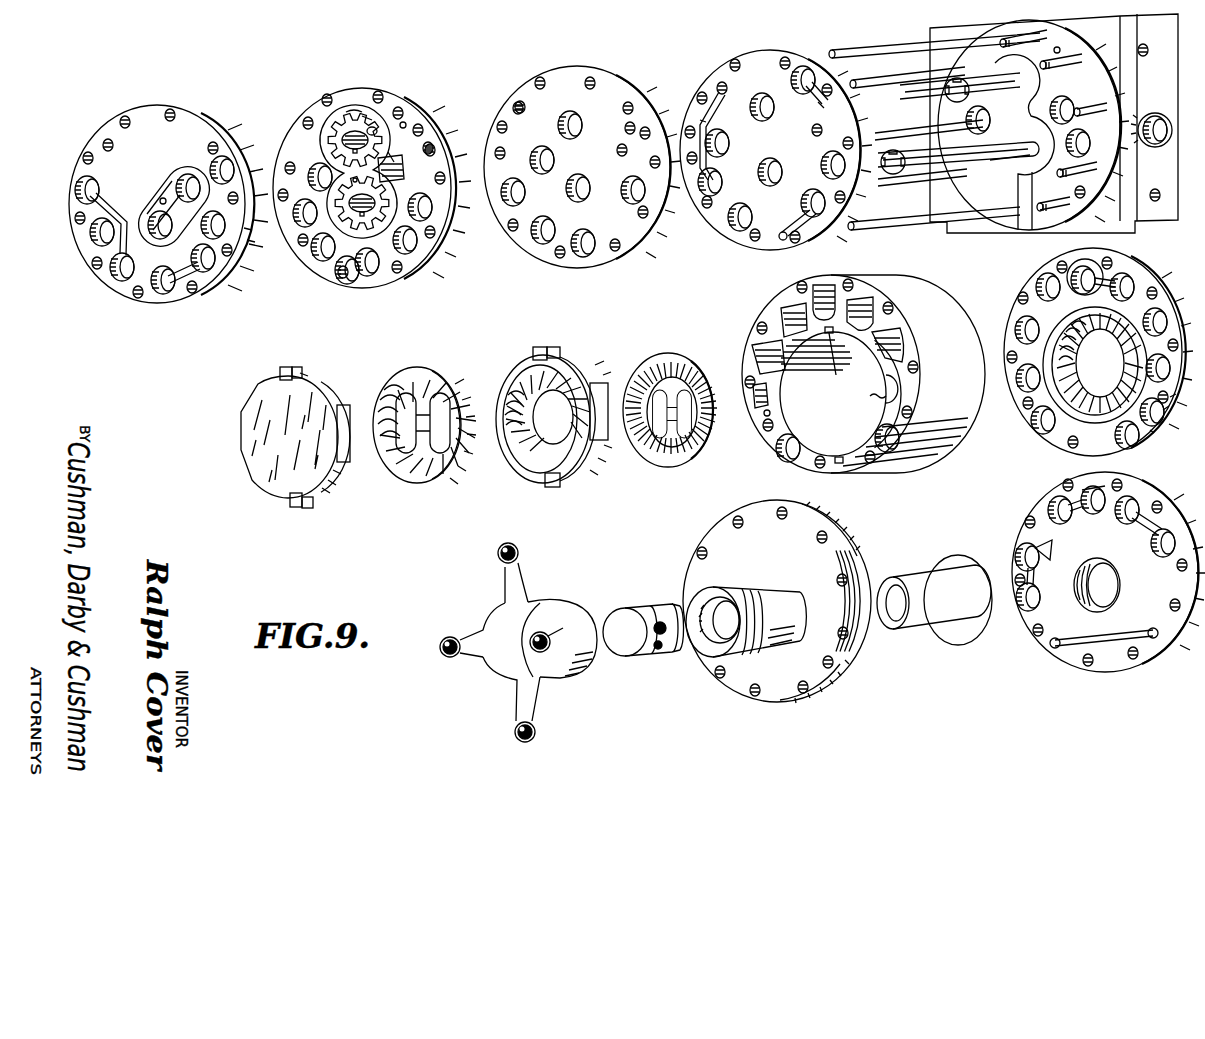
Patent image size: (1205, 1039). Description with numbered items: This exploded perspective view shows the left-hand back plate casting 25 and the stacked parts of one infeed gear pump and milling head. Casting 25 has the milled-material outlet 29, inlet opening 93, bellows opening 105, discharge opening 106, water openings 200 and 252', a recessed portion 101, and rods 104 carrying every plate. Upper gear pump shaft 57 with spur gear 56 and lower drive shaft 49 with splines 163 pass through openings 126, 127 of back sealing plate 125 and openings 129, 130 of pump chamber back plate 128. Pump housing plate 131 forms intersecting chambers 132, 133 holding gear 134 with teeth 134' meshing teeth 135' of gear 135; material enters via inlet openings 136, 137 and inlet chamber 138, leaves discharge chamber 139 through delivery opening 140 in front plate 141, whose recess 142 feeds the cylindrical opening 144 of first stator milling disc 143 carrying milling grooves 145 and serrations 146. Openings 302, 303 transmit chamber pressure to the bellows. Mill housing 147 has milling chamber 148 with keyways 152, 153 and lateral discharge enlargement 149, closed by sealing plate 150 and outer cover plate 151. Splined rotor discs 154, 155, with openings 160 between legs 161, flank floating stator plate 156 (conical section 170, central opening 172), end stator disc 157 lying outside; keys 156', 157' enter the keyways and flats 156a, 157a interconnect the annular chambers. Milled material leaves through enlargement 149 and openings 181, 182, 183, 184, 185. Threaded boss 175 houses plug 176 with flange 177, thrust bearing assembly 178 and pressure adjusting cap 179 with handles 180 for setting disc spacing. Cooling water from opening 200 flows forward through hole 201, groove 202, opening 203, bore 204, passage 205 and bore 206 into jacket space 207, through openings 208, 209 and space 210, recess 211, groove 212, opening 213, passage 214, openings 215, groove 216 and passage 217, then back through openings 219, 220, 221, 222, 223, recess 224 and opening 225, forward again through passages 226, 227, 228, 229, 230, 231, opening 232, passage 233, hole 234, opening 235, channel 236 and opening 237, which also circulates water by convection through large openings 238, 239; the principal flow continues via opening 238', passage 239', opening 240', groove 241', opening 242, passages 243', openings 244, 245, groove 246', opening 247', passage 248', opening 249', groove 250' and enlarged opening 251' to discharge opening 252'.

The housing block 25 is at (958, 28).
The bushing 29 is at (1158, 147).
The rod 49 is at (993, 164).
The gear tooth 56 is at (351, 108).
The cavity 57 is at (996, 77).
The bore 93 is at (987, 120).
The rod 101 is at (838, 30).
The rod 104 is at (896, 46).
The bore 105 is at (1063, 104).
The bore 106 is at (1086, 140).
The plate 125 is at (762, 60).
The port 126 is at (775, 92).
The port 127 is at (776, 170).
The plate 128 is at (622, 93).
The port 129 is at (578, 116).
The port 130 is at (585, 200).
The gear 131 is at (352, 113).
The gear shaft 132 is at (370, 117).
The gear 133 is at (365, 232).
The gear shaft 134 is at (398, 82).
The gear shaft 134' is at (427, 115).
The passage 135 is at (406, 173).
The passage 135' is at (324, 272).
The port 136 is at (728, 143).
The port 137 is at (553, 158).
The passage 138 is at (287, 164).
The passage 139 is at (435, 147).
The slot 140 is at (188, 175).
The end plate 141 is at (149, 112).
The port 142 is at (222, 240).
The passage 143 is at (1160, 336).
The brushes 144 is at (1118, 357).
The ring 145 is at (1130, 380).
The bore 146 is at (1100, 363).
The cylinder 147 is at (965, 300).
The bore 148 is at (785, 473).
The notch 149 is at (904, 392).
The plate 150 is at (1195, 580).
The end plate 151 is at (707, 676).
The keyway 152 is at (834, 340).
The key 153 is at (802, 468).
The brush ring 154 is at (670, 457).
The brush disc 155 is at (392, 380).
The ring 156 is at (557, 412).
The tab 156' is at (561, 338).
The rim 156a is at (610, 445).
The disc 157 is at (289, 419).
The tab 157' is at (276, 425).
The rim 157a is at (352, 465).
The inner ring 160 is at (662, 363).
The cross opening 161 is at (677, 387).
The slotted hole 163 is at (934, 96).
The inner ring 170 is at (557, 382).
The hole 172 is at (554, 428).
The hub 175 is at (767, 590).
The tube 176 is at (922, 620).
The flange 177 is at (958, 556).
The bearing ring 178 is at (652, 605).
The cross member 179 is at (567, 605).
The ball 180 is at (503, 562).
The rim 181 is at (1154, 436).
The rim 182 is at (252, 232).
The port 183 is at (432, 215).
The port 184 is at (645, 196).
The port 185 is at (845, 160).
The hole 200 is at (1058, 47).
The lever 201 is at (805, 68).
The pin 202 is at (820, 108).
The hole 203 is at (625, 128).
The hole 204 is at (405, 123).
The port 205 is at (230, 160).
The rim 206 is at (1166, 412).
The slot 207 is at (903, 347).
The port 208 is at (1160, 550).
The link 209 is at (1123, 522).
The slot 210 is at (876, 308).
The port 211 is at (1080, 262).
The port 212 is at (1130, 283).
The link 213 is at (1100, 262).
The slot 214 is at (822, 283).
The link 215 is at (1097, 482).
The port 216 is at (1050, 507).
The port 217 is at (1058, 496).
The port 219 is at (1043, 277).
The hole 220 is at (108, 140).
The plate 221 is at (309, 118).
The hole 222 is at (522, 102).
The lever 223 is at (722, 84).
The lever arm 224 is at (708, 112).
The port 225 is at (720, 184).
The port 226 is at (524, 195).
The port 227 is at (305, 228).
The port 228 is at (95, 242).
The port 229 is at (1026, 392).
The hole 230 is at (771, 412).
The port 231 is at (1033, 595).
The port 232 is at (1030, 542).
The ring plate 233 is at (752, 358).
The plate 234 is at (1022, 318).
The port 235 is at (93, 185).
The lever 236 is at (118, 216).
The port 237 is at (117, 275).
The hole 238 is at (351, 253).
The hole 238' is at (1039, 445).
The port 239 is at (539, 250).
The hole 239' is at (761, 452).
The hole 240' is at (1019, 642).
The rod 241' is at (1104, 632).
The hole 242 is at (1155, 666).
The port 243' is at (875, 464).
The port 244 is at (1127, 447).
The port 245 is at (205, 270).
The hole 246' is at (184, 322).
The port 247' is at (164, 295).
The port 248' is at (383, 287).
The port 249' is at (597, 259).
The lever 250' is at (792, 214).
The hole 251' is at (867, 204).
The hole 252' is at (1122, 215).
The hole 302 is at (822, 128).
The hole 303 is at (620, 155).